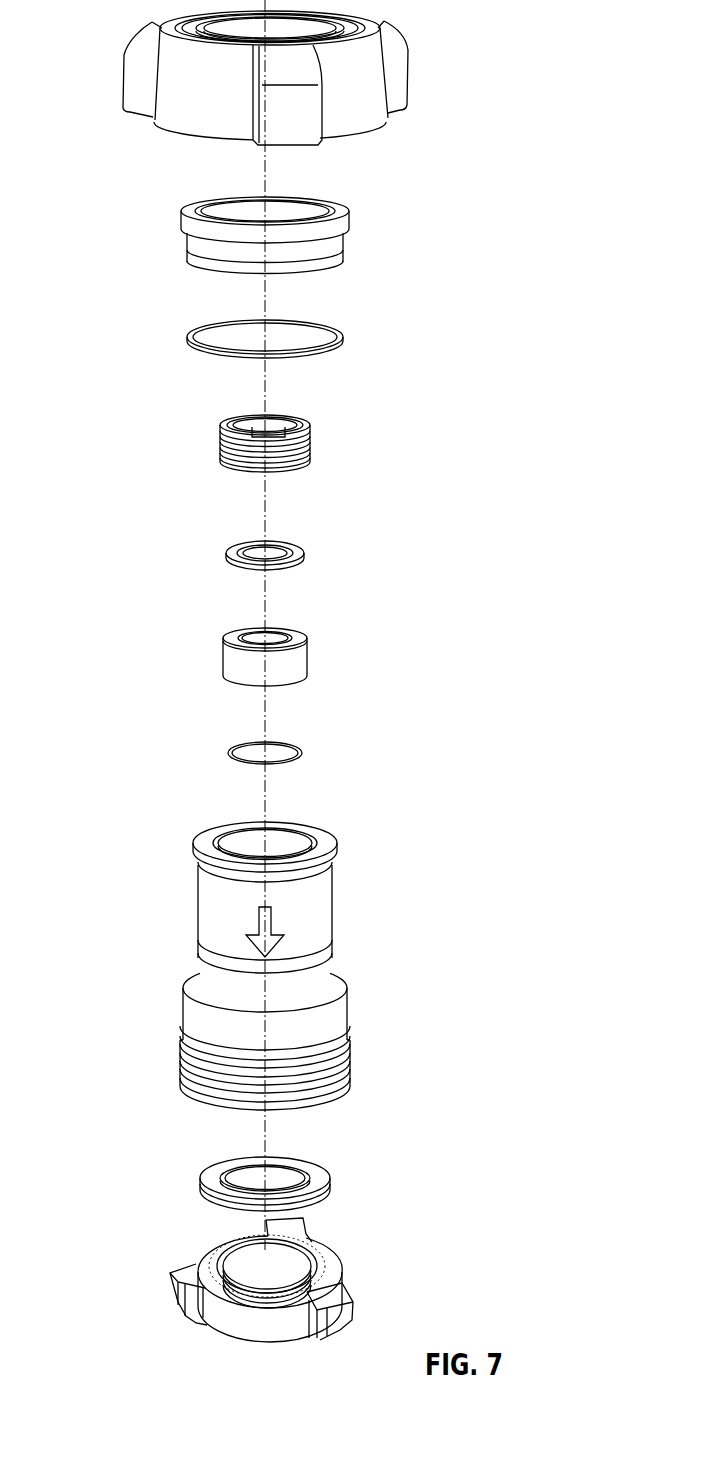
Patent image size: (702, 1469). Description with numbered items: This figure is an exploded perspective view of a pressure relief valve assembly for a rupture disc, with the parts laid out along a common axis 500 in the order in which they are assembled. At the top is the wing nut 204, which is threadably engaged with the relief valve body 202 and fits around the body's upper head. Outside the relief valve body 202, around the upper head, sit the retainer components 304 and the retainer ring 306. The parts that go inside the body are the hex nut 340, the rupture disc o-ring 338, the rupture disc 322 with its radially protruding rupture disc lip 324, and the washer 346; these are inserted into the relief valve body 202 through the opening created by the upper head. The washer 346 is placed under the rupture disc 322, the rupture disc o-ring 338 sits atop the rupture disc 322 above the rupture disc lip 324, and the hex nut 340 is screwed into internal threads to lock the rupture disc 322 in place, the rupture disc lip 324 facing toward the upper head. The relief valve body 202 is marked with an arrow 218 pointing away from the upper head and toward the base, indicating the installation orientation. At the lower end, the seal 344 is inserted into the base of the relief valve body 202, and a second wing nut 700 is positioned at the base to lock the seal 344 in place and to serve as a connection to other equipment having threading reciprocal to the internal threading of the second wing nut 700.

The wing nut 204 is at (365, 62).
The central axis 500 is at (263, 185).
The retainer segments 304 is at (320, 250).
The retainer ring 306 is at (345, 338).
The hex nut 340 is at (313, 450).
The rupture disc o-ring 338 is at (305, 548).
The rupture disc 322 is at (292, 662).
The rupture disc lip 324 is at (228, 641).
The washer 346 is at (300, 756).
The arrow 218 is at (275, 922).
The relief valve body 202 is at (350, 1000).
The seal 344 is at (330, 1180).
The second wing nut 700 is at (345, 1302).